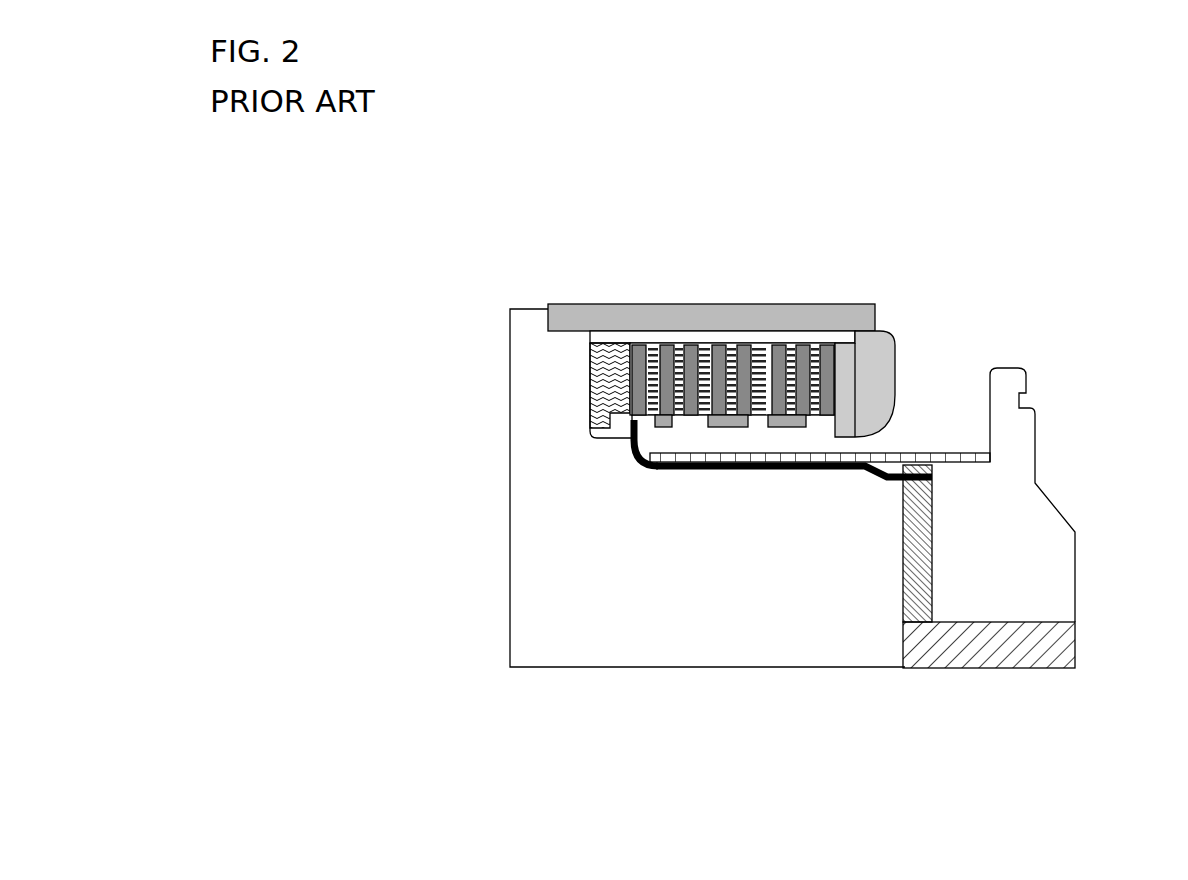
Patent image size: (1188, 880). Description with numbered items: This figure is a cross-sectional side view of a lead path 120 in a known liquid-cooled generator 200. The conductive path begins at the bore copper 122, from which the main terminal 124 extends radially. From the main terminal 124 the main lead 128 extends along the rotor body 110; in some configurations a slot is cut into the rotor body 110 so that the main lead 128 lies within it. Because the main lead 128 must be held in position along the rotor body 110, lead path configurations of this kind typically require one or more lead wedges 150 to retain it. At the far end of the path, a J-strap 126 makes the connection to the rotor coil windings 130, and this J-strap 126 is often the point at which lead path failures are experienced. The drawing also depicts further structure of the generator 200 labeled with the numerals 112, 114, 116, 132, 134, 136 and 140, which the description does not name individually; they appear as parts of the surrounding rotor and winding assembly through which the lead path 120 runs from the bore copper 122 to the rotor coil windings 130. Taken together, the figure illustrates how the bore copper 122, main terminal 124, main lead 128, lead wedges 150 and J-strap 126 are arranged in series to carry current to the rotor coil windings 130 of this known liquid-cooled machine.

The liquid-cooled generator 200 is at (789, 257).
The rotor body 110 is at (618, 561).
The second housing portion 112 is at (979, 561).
The lid / cover plate 114 is at (652, 318).
The side bracket 116 is at (875, 362).
The lead path 120 is at (1013, 695).
The bore copper 122 is at (947, 647).
The main terminal 124 is at (917, 577).
The J-strap 126 is at (630, 447).
The main lead 128 is at (743, 470).
The rotor coil windings 130 is at (714, 345).
The chip die 132 is at (801, 362).
The solder bumps 134 is at (668, 420).
The encapsulant / filler 136 is at (636, 345).
The housing wall 140 is at (1019, 372).
The lead wedge 150 is at (922, 453).